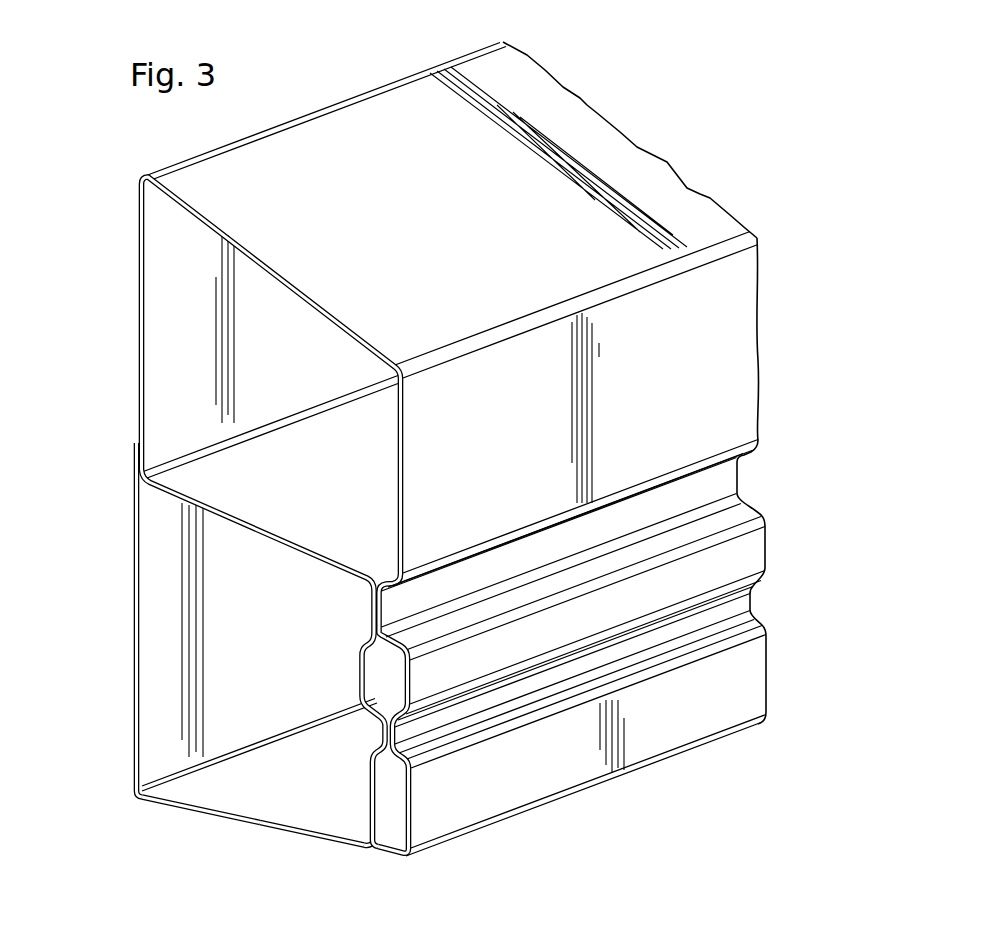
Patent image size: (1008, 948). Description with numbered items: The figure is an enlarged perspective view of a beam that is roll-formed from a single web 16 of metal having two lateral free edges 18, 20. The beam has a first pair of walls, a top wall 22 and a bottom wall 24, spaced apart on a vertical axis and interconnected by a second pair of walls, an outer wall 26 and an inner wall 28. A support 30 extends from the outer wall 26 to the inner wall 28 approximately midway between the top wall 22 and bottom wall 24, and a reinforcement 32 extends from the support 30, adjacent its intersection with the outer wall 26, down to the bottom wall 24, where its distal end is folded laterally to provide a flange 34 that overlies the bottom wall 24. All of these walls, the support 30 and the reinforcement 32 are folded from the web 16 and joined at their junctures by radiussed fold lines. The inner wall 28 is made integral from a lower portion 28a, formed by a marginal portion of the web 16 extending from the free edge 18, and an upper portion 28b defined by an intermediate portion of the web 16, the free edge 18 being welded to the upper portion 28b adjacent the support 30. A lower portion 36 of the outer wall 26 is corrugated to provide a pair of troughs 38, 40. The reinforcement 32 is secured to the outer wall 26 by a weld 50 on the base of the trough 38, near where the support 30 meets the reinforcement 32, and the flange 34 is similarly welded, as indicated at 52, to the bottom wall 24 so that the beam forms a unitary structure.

The web 16 is at (461, 203).
The lateral free edge 18 is at (137, 446).
The lateral free edge 20 is at (336, 841).
The top wall 22 is at (284, 262).
The bottom wall 24 is at (206, 829).
The outer wall 26 is at (413, 463).
The inner wall 28 is at (132, 373).
The lower portion of inner wall 28a is at (133, 652).
The upper portion of inner wall 28b is at (137, 276).
The support 30 is at (252, 543).
The reinforcement 32 is at (352, 679).
The flange 34 is at (362, 832).
The lower portion of outer wall 36 is at (412, 800).
The trough 38 is at (401, 596).
The trough 40 is at (407, 732).
The weld 50 is at (364, 603).
The weld 52 is at (358, 849).